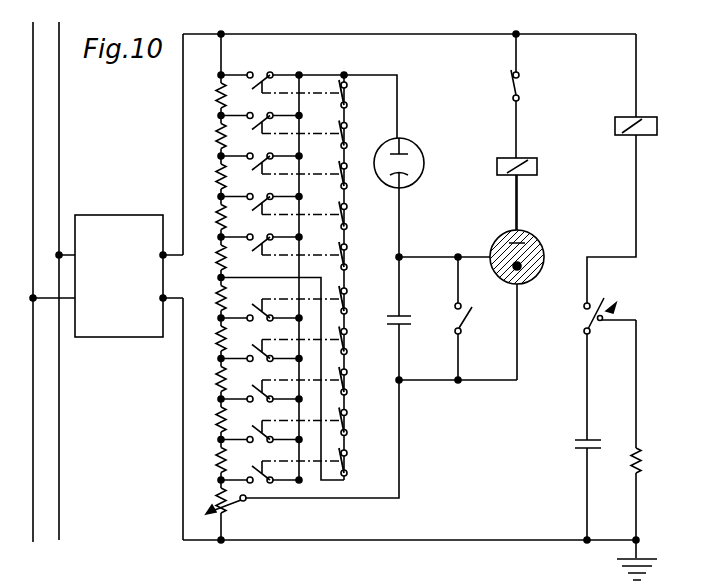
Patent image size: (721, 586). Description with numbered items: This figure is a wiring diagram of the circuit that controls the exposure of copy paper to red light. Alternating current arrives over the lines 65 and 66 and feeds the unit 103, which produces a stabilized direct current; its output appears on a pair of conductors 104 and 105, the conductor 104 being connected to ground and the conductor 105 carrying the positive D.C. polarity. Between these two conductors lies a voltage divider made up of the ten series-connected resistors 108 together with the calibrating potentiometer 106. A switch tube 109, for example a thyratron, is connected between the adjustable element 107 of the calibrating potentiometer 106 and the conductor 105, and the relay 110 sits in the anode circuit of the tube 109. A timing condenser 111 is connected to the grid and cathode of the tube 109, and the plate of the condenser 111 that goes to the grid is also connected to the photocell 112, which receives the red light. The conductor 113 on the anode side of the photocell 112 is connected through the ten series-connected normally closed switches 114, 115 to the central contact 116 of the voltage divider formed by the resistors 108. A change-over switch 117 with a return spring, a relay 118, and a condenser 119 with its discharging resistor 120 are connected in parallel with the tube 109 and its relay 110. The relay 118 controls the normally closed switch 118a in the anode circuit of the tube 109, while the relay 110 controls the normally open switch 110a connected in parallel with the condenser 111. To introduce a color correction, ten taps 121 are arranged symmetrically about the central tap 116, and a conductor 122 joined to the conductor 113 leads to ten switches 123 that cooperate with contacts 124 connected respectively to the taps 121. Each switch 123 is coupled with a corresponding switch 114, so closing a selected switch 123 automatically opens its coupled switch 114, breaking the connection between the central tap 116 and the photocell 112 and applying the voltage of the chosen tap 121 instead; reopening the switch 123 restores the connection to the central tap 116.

The line 65 is at (33, 525).
The line 66 is at (60, 497).
The unit 103 is at (128, 228).
The conductor 104 is at (306, 541).
The conductor 105 is at (328, 35).
The calibrating potentiometer 106 is at (219, 497).
The adjustable element 107 is at (237, 500).
The resistor 108 is at (219, 134).
The switch tube 109 is at (530, 240).
The relay 110 is at (532, 157).
The normally open switch 110a is at (463, 318).
The timing condenser 111 is at (396, 320).
The photocell 112 is at (403, 142).
The conductor 113 is at (378, 75).
The normally closed switch 114 is at (347, 143).
The normally closed switch 115 is at (347, 117).
The central contact 116 is at (219, 277).
The change-over switch 117 is at (585, 322).
The relay 118 is at (622, 122).
The normally closed switch 118a is at (518, 88).
The condenser 119 is at (578, 442).
The discharging resistor 120 is at (643, 468).
The tap 121 is at (219, 114).
The conductor 122 is at (304, 64).
The switch 123 is at (281, 134).
The contact 124 is at (281, 93).